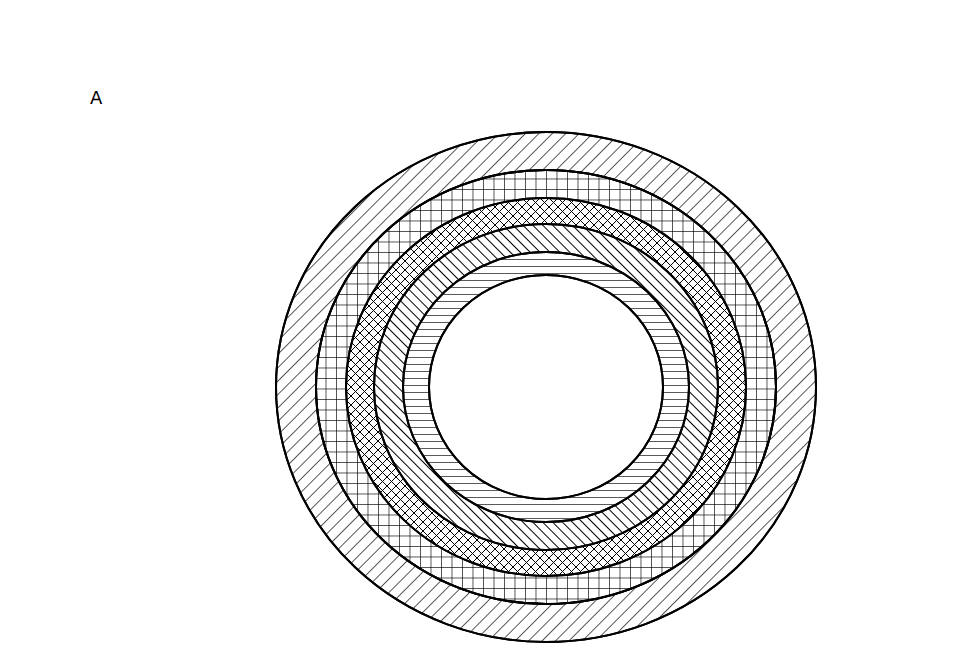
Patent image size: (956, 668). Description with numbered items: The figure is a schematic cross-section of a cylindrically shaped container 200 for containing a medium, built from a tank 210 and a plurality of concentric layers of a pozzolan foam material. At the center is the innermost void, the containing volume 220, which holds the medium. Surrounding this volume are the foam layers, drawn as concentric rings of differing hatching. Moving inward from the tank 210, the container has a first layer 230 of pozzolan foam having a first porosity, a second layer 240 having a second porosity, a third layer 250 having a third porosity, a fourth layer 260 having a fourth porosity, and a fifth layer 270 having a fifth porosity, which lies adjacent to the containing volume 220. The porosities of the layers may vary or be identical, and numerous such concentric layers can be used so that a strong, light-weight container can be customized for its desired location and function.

The container 200 is at (320, 173).
The tank 210 is at (317, 252).
The containing volume 220 is at (533, 387).
The first layer 230 is at (303, 338).
The second layer 240 is at (337, 387).
The third layer 250 is at (358, 412).
The fourth layer 260 is at (395, 440).
The fifth layer 270 is at (445, 470).